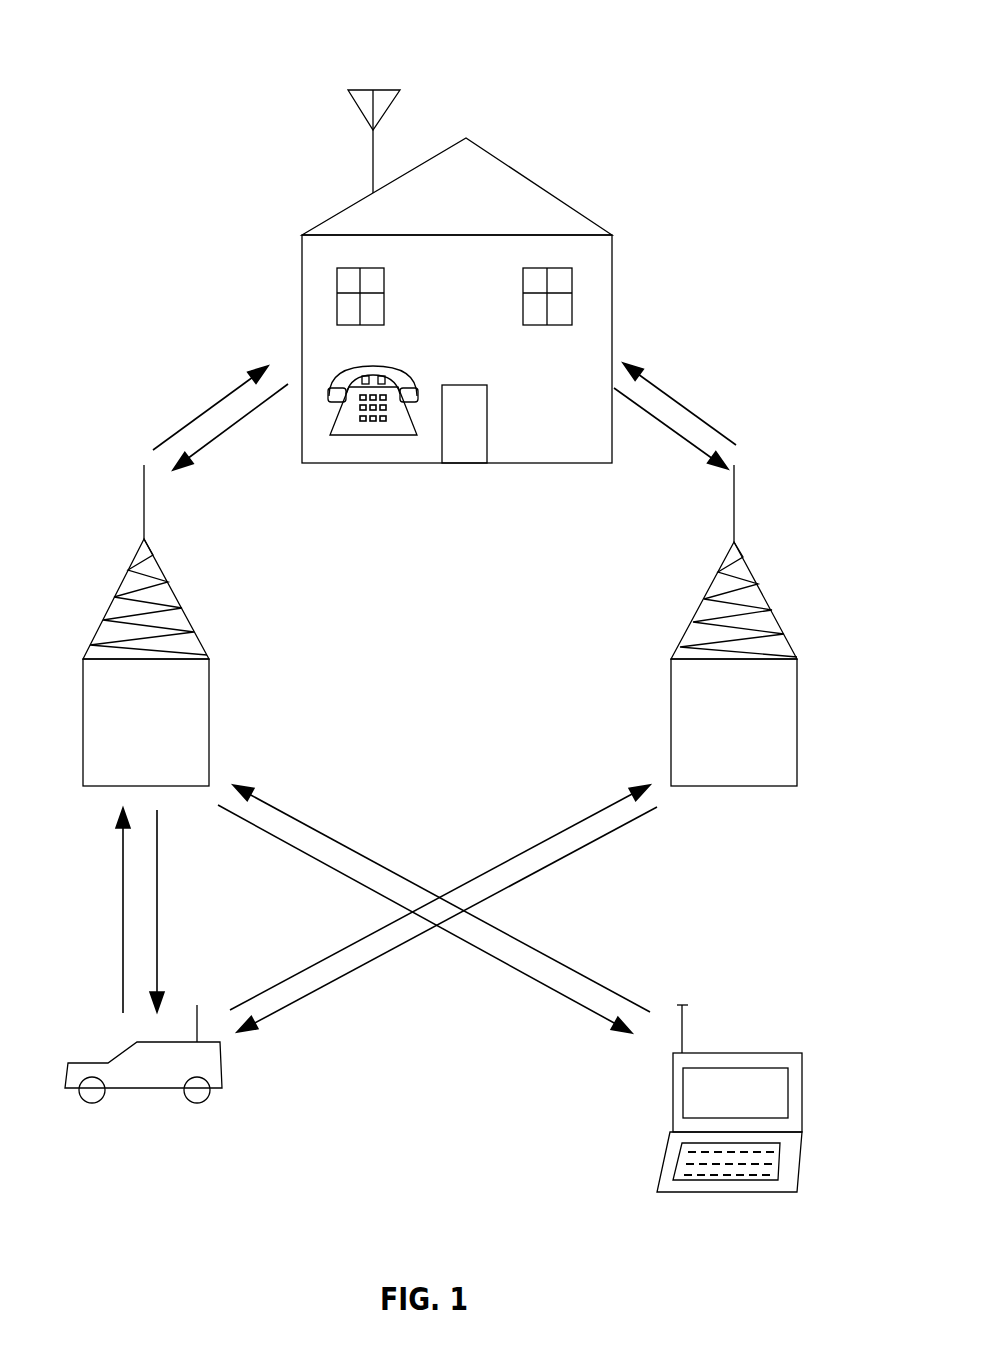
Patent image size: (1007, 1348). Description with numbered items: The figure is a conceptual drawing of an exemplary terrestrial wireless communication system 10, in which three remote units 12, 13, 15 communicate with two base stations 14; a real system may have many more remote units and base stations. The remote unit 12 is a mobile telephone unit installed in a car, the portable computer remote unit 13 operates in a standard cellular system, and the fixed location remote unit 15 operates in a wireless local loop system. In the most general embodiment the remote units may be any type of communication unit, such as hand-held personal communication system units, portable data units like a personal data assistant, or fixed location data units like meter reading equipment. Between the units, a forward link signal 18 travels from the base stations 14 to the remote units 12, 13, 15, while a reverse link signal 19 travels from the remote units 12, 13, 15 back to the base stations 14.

The terrestrial wireless communication system 10 is at (437, 598).
The remote unit 12 is at (88, 1062).
The portable computer remote unit 13 is at (780, 1052).
The base station 14 is at (116, 598).
The fixed location remote unit 15 is at (535, 183).
The forward link signal 18 is at (225, 397).
The reverse link signal 19 is at (241, 420).